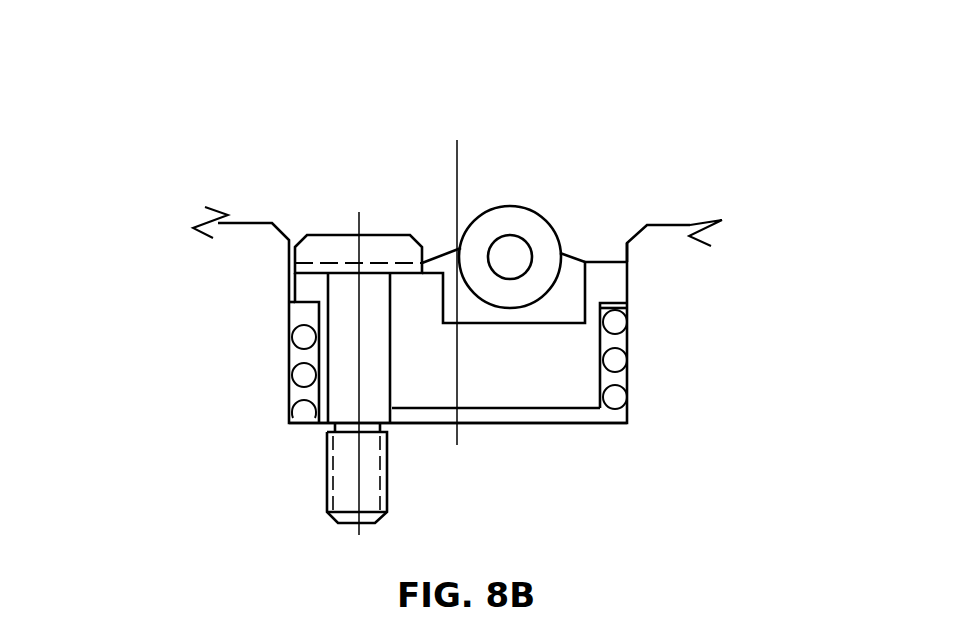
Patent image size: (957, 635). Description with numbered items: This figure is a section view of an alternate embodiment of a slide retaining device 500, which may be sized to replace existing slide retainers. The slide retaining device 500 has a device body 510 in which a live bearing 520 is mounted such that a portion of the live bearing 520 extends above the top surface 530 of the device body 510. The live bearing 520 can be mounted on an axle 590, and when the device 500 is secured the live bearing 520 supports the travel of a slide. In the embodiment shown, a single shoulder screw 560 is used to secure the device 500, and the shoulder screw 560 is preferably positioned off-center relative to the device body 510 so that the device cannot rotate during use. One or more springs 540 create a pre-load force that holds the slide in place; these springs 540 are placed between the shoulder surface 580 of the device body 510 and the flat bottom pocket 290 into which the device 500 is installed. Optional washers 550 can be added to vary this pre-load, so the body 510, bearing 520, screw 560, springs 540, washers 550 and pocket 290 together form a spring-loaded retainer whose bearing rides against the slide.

The slide retaining device 500 is at (273, 138).
The device body 510 is at (610, 285).
The live bearing 520 is at (523, 223).
The top surface 530 is at (588, 258).
The springs 540 is at (627, 403).
The washers 550 is at (623, 305).
The shoulder screw 560 is at (338, 291).
The shoulder surface 580 is at (292, 333).
The axle 590 is at (518, 245).
The flat bottom pocket 290 is at (292, 395).